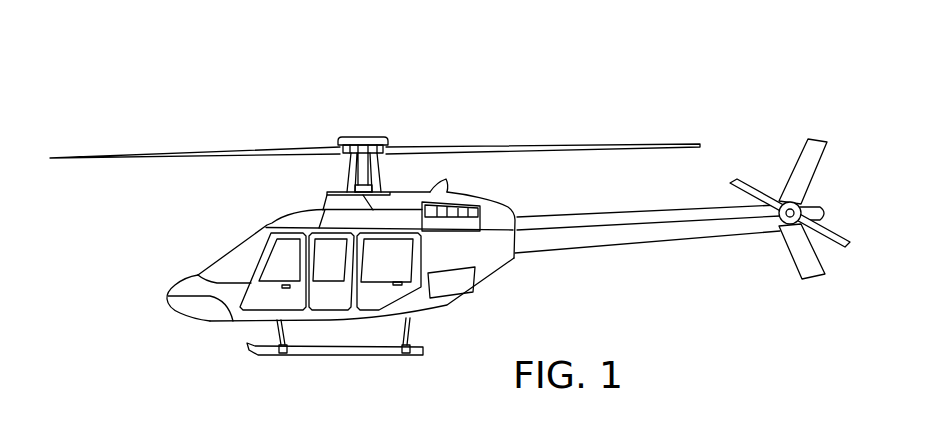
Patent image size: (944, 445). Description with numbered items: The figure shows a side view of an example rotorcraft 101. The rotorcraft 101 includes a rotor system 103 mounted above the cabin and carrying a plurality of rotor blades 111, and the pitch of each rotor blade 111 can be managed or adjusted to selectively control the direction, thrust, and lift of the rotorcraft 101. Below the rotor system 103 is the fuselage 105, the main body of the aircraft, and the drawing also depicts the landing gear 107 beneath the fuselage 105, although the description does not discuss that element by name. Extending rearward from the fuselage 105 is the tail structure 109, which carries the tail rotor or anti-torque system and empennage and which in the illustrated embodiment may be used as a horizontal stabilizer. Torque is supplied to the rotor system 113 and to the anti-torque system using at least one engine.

The rotorcraft 101 is at (255, 80).
The rotor system 103 is at (347, 120).
The fuselage 105 is at (203, 321).
The landing skid 107 is at (310, 355).
The tail structure 109 is at (662, 241).
The rotor blade 111 is at (540, 146).
The rotor system 113 is at (347, 171).